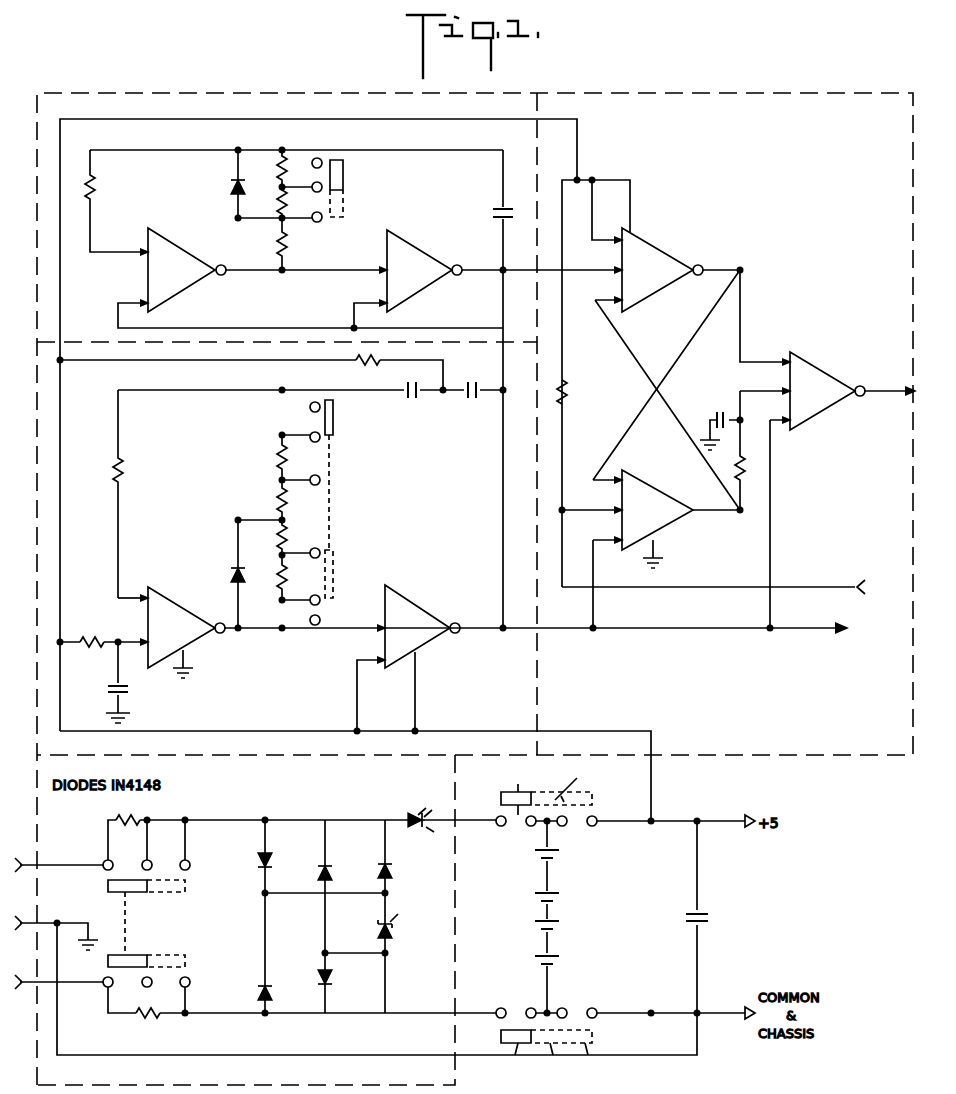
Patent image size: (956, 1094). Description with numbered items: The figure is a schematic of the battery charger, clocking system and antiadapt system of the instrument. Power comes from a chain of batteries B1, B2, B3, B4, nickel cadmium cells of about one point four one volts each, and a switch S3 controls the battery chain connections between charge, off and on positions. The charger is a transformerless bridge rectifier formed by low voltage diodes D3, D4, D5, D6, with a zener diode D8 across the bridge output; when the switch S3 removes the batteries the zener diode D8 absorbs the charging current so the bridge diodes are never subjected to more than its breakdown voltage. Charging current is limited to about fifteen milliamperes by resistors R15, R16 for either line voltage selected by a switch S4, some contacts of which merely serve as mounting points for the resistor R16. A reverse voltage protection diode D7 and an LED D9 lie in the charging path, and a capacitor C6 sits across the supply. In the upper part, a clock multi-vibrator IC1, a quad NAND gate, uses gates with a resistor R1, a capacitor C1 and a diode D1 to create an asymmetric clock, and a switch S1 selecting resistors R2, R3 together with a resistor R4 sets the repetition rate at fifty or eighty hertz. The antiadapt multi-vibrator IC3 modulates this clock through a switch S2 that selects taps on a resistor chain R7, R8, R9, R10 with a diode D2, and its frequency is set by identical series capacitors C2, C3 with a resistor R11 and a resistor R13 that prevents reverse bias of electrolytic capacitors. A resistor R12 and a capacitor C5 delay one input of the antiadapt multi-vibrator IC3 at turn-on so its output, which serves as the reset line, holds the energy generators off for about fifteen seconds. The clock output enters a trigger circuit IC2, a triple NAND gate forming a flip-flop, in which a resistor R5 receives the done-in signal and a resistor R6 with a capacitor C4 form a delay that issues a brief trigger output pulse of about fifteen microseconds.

The clock multi-vibrator IC1 is at (288, 204).
The trigger circuit IC2 is at (751, 428).
The antiadapt multi-vibrator IC3 is at (274, 518).
The resistor R1 is at (116, 201).
The resistor R2 is at (280, 168).
The resistor R3 is at (280, 202).
The resistor R4 is at (295, 244).
The resistor R5 is at (579, 391).
The resistor R6 is at (752, 465).
The resistor R7 is at (262, 457).
The resistor R8 is at (266, 498).
The resistor R9 is at (266, 537).
The resistor R10 is at (268, 577).
The resistor R11 is at (142, 494).
The resistor R12 is at (91, 640).
The resistor R13 is at (365, 367).
The resistor R15 is at (137, 826).
The resistor R16 is at (145, 1017).
The capacitor C1 is at (491, 215).
The capacitor C2 is at (405, 397).
The capacitor C3 is at (467, 397).
The capacitor C4 is at (708, 410).
The capacitor C5 is at (111, 694).
The capacitor C6 is at (709, 922).
The diode D1 is at (221, 184).
The diode D2 is at (222, 574).
The bridge diode D3 is at (279, 856).
The bridge diode D4 is at (337, 886).
The bridge diode D5 is at (277, 953).
The bridge diode D6 is at (337, 983).
The reverse voltage protection diode D7 is at (398, 856).
The zener diode D8 is at (406, 953).
The LED D9 is at (410, 811).
The switch S1 is at (368, 189).
The switch S2 is at (329, 512).
The switch S3 is at (550, 920).
The switch S4 is at (146, 923).
The battery B1 is at (562, 856).
The battery B2 is at (562, 902).
The battery B3 is at (562, 936).
The battery B4 is at (562, 983).